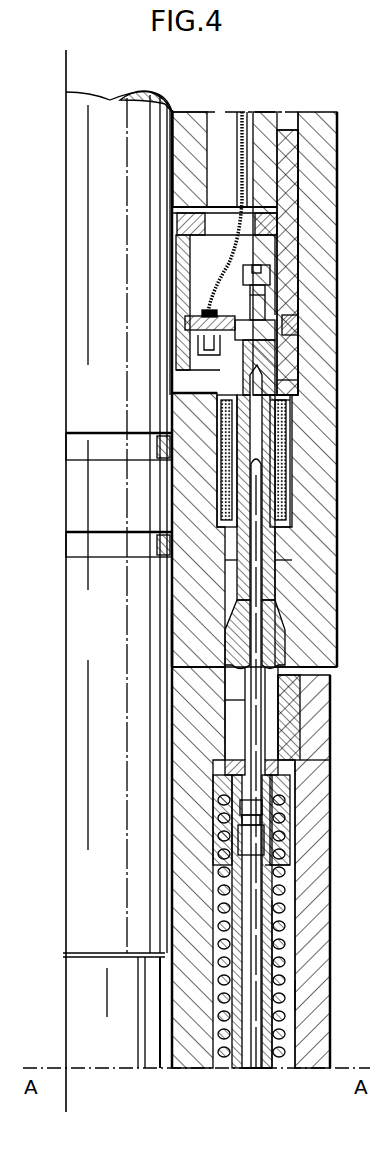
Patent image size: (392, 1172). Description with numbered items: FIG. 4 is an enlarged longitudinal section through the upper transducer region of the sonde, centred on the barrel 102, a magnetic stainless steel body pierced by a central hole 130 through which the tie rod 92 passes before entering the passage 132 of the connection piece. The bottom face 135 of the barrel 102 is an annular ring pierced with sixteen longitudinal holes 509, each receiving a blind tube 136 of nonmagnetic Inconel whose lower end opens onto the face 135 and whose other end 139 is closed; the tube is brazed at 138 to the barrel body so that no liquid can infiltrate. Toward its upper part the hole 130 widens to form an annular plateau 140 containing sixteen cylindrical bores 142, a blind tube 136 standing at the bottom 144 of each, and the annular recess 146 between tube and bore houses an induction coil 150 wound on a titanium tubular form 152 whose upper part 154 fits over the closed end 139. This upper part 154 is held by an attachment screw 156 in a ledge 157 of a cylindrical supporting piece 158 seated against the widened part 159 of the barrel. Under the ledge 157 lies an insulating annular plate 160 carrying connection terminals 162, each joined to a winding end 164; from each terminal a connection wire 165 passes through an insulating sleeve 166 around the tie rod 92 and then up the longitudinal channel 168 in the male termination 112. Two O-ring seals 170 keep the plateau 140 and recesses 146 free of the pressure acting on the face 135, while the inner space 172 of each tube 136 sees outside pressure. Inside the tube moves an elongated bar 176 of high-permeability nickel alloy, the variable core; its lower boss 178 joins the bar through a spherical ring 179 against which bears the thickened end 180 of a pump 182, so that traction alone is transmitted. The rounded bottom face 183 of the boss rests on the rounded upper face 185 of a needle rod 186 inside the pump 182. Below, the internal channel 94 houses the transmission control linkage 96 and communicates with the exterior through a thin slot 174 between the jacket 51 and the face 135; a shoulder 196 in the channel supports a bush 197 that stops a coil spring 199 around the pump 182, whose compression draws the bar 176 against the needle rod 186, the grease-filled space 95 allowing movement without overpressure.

The tie rod 92 is at (110, 100).
The male termination 112 is at (190, 114).
The longitudinal channel 168 is at (225, 118).
The cylindrical supporting piece 158 is at (290, 130).
The widened part 159 is at (288, 162).
The passage 132 is at (170, 135).
The connection wire 165 is at (235, 163).
The insulating sleeve 166 is at (175, 230).
The annular plate 160 is at (188, 283).
The connection terminals 162 is at (190, 340).
The winding end 164 is at (200, 378).
The attachment screw 156 is at (266, 268).
The ledge 157 is at (270, 295).
The upper part of the form 154 is at (272, 327).
The closed end 139 is at (272, 350).
The tubular form 152 is at (286, 384).
The inner space 172 is at (280, 405).
The annular plateau 140 is at (172, 393).
The O-ring seals 170 is at (160, 542).
The induction coil 150 is at (217, 457).
The cylindrical bores 142 is at (276, 440).
The blind tube 136 is at (272, 614).
The bottom of bore 144 is at (277, 517).
The barrel 102 is at (305, 542).
The longitudinal holes 509 is at (280, 580).
The annular recess 146 is at (228, 562).
The central hole 130 is at (172, 620).
The thin slot 174 is at (318, 672).
The bottom face 135 is at (247, 713).
The brazing 138 is at (272, 693).
The space 95 is at (271, 720).
The elongated bar 176 is at (232, 710).
The shoulder 196 is at (214, 775).
The bush 197 is at (286, 780).
The end of the pump 180 is at (285, 801).
The jacket 51 is at (318, 818).
The spherical ring 179 is at (242, 830).
The boss 178 is at (236, 836).
The bottom face 183 is at (240, 855).
The upper face 185 is at (274, 866).
The internal channel 94 is at (288, 885).
The coil spring 199 is at (272, 922).
The pump 182 is at (272, 970).
The transmission control linkage 96 is at (288, 993).
The needle rod 186 is at (272, 1030).